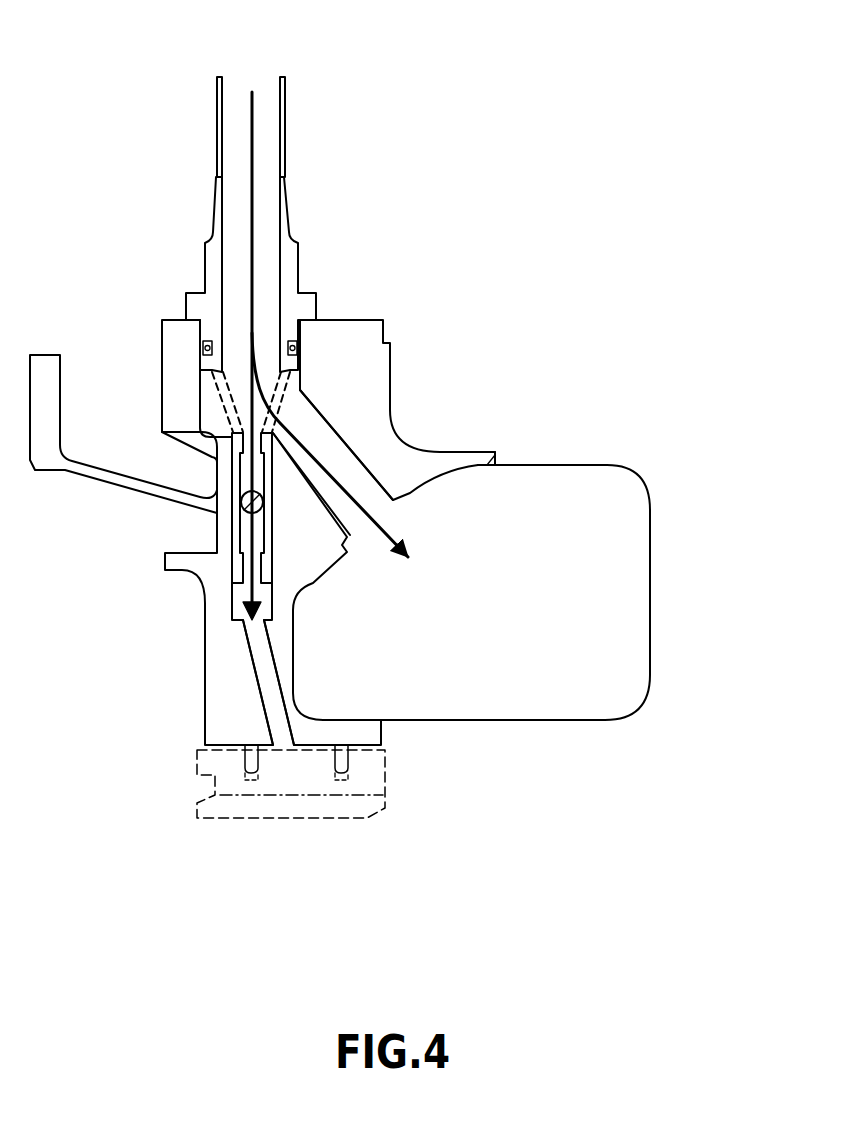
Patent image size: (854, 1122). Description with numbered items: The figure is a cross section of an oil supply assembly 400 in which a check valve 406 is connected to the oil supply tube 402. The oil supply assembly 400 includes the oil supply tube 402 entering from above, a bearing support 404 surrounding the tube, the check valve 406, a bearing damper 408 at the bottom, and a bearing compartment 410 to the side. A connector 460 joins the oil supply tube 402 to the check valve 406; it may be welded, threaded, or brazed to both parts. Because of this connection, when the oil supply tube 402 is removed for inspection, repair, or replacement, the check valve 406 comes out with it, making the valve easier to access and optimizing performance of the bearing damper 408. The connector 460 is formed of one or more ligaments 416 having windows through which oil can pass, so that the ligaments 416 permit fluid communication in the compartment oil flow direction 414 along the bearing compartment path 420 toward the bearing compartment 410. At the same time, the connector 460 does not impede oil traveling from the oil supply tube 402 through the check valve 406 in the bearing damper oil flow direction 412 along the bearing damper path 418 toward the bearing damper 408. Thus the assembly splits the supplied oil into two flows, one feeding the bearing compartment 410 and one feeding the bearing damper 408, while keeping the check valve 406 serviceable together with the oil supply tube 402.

The oil supply assembly 400 is at (586, 90).
The oil supply tube 402 is at (217, 172).
The bearing support 404 is at (170, 378).
The check valve 406 is at (240, 508).
The bearing damper 408 is at (170, 772).
The bearing compartment 410 is at (627, 600).
The bearing damper oil flow direction 412 is at (282, 558).
The compartment oil flow direction 414 is at (352, 487).
The ligaments 416 is at (220, 385).
The bearing damper path 418 is at (240, 623).
The bearing compartment path 420 is at (330, 437).
The connector 460 is at (212, 410).